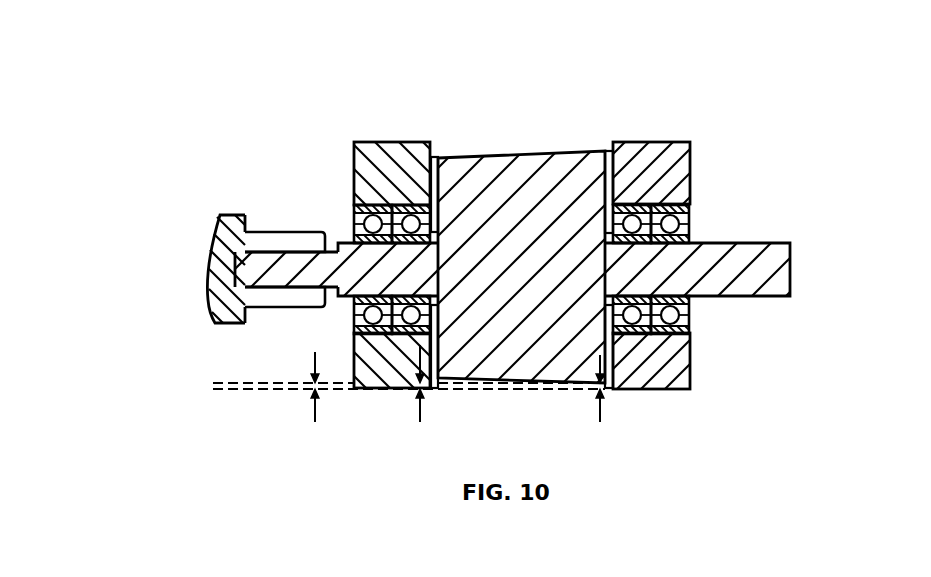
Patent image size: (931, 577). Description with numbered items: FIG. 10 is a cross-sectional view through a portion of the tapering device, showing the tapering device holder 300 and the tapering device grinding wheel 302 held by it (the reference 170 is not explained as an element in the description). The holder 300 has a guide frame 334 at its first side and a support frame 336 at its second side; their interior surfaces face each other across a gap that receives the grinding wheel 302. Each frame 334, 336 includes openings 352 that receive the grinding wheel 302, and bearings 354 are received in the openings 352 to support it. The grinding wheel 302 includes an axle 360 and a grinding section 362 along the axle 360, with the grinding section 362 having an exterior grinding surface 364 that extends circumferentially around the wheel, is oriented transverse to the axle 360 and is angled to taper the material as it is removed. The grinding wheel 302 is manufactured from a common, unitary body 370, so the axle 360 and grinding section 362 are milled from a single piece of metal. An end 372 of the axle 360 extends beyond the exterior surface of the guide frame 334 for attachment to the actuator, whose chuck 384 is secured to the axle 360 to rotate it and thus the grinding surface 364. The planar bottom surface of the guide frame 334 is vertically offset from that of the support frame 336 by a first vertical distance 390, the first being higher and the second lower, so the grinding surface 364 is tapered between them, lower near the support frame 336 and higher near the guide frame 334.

The rotor assembly 170 is at (592, 50).
The tapering device holder 300 is at (712, 90).
The tapering device grinding wheel 302 is at (515, 146).
The guide frame 334 is at (397, 150).
The support frame 336 is at (660, 150).
The openings 352 is at (702, 333).
The bearings 354 is at (672, 227).
The axle 360 is at (772, 282).
The grinding section 362 is at (563, 180).
The grinding surface 364 is at (508, 387).
The unitary body 370 is at (478, 173).
The end of the axle 372 is at (285, 263).
The chuck 384 is at (300, 240).
The first vertical distance 390 is at (315, 410).